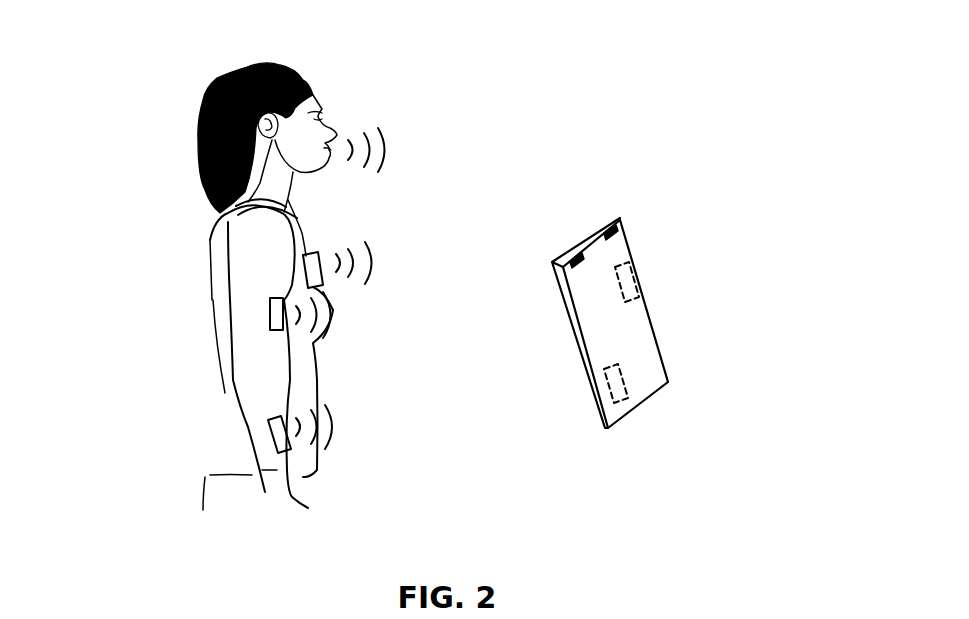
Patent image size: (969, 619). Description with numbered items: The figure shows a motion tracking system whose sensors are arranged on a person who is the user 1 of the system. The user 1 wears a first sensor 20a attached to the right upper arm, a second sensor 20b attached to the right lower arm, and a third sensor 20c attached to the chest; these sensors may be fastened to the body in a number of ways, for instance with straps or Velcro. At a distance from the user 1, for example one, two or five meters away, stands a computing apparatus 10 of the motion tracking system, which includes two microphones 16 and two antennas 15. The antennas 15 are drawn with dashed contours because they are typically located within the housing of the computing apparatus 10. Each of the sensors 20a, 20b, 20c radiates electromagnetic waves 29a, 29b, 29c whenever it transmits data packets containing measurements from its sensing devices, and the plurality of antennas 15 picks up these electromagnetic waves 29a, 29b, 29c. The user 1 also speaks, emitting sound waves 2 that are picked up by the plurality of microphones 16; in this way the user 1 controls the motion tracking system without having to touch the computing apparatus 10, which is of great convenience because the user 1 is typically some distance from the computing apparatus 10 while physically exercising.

The user 1 is at (236, 226).
The sound waves 2 is at (399, 118).
The computing apparatus 10 is at (652, 352).
The antennas 15 is at (625, 278).
The microphones 16 is at (567, 229).
The first sensor 20a is at (277, 315).
The second sensor 20b is at (275, 432).
The third sensor 20c is at (305, 267).
The electromagnetic waves 29a is at (349, 340).
The electromagnetic waves 29b is at (350, 450).
The electromagnetic waves 29c is at (383, 228).